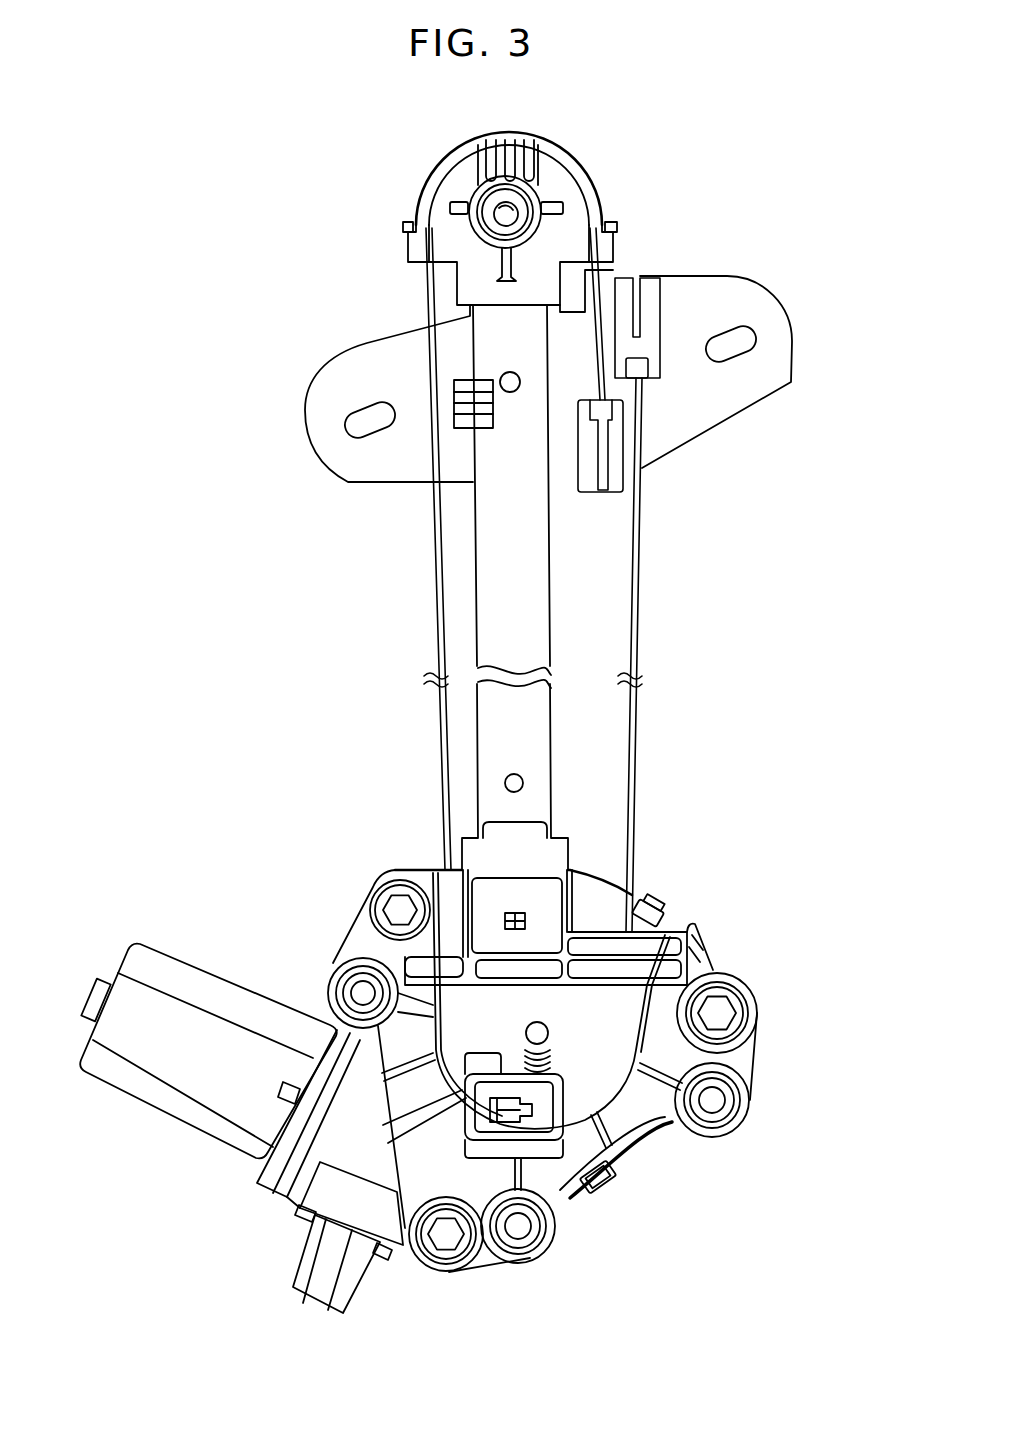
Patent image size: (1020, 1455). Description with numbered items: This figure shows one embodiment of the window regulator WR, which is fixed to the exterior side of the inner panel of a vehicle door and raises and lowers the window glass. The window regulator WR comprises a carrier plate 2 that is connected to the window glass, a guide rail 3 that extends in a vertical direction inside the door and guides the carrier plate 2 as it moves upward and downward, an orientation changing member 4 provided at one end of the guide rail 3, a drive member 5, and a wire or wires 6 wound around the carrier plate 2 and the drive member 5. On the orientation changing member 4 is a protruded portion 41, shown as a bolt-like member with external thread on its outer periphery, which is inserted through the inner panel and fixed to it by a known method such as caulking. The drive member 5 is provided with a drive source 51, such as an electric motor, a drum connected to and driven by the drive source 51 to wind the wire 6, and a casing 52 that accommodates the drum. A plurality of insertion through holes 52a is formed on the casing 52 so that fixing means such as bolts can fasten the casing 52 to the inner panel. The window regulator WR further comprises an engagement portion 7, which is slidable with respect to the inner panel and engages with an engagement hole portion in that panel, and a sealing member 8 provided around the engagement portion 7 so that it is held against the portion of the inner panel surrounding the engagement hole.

The window regulator WR is at (218, 605).
The carrier plate 2 is at (702, 290).
The guide rail 3 is at (510, 540).
The orientation changing member 4 is at (440, 228).
The protruded portion 41 is at (512, 212).
The drive member 5 is at (765, 906).
The drive source 51 is at (175, 1097).
The casing 52 is at (623, 1123).
The insertion through holes 52a is at (360, 991).
The wire 6 is at (440, 780).
The engagement portion 7 is at (533, 1118).
The sealing member 8 is at (453, 1152).